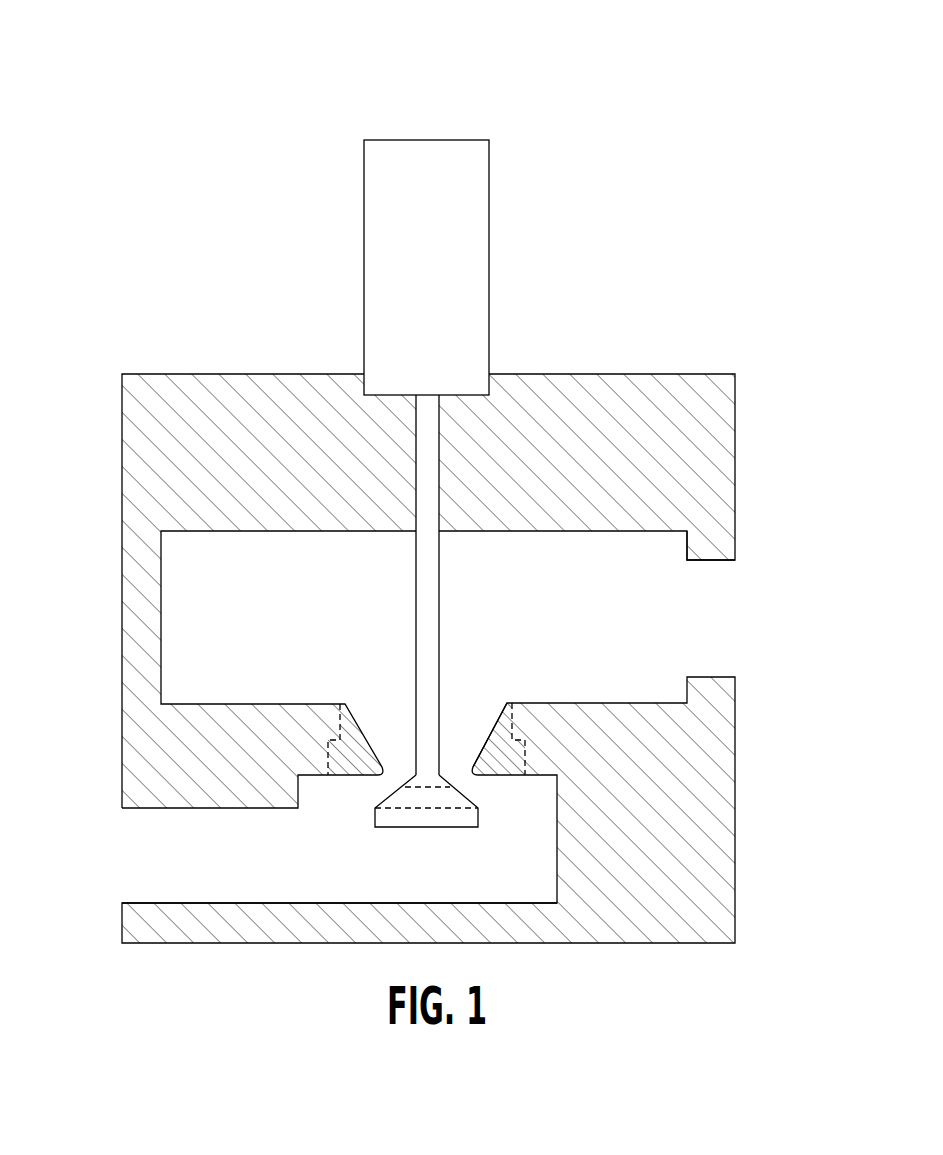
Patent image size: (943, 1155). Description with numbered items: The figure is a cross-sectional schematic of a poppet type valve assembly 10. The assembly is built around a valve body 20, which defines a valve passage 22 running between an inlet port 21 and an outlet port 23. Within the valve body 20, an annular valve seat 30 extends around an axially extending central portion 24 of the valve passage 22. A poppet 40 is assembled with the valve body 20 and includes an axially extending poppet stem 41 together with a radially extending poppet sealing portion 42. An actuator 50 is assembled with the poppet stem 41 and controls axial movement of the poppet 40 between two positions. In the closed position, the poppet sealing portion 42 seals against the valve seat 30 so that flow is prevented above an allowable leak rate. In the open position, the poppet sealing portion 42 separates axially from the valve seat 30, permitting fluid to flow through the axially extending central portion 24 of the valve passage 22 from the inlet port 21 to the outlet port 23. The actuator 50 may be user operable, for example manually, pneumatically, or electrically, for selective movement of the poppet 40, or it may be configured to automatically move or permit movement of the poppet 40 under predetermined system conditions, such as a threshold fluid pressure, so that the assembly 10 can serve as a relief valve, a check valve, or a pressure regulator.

The poppet type valve assembly 10 is at (769, 96).
The valve body 20 is at (693, 437).
The inlet port 21 is at (145, 902).
The valve passage 22 is at (480, 702).
The outlet port 23 is at (704, 560).
The axially extending central portion of the valve passage 24 is at (482, 799).
The annular valve seat 30 is at (510, 758).
The poppet 40 is at (480, 639).
The poppet stem 41 is at (427, 580).
The poppet sealing portion 42 is at (388, 797).
The actuator 50 is at (467, 192).